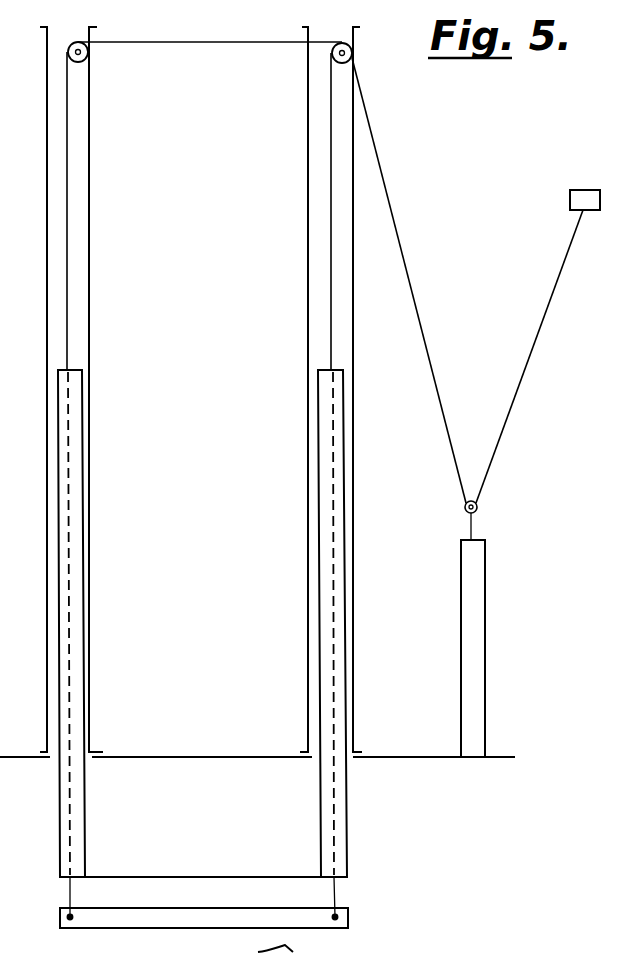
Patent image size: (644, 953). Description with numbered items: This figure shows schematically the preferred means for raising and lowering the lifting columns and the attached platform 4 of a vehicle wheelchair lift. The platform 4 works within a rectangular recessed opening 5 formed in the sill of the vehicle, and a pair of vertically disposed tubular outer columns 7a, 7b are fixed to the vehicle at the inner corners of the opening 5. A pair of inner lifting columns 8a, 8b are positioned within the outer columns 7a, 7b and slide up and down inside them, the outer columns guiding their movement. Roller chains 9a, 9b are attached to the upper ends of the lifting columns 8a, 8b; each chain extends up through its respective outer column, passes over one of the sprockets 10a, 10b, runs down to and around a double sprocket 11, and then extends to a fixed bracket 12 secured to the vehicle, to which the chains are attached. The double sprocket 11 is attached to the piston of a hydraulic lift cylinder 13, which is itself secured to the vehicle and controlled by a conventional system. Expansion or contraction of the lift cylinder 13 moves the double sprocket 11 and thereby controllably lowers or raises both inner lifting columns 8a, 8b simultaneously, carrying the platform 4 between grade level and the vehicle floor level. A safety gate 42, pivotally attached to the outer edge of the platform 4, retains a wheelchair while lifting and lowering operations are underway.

The platform 4 is at (212, 877).
The rectangular recessed opening 5 is at (195, 720).
The tubular outer column 7a is at (89, 212).
The tubular outer column 7b is at (308, 215).
The inner lifting column 8a is at (70, 470).
The inner lifting column 8b is at (325, 470).
The roller chain 9a is at (67, 297).
The roller chain 9b is at (331, 292).
The sprocket 10a is at (86, 58).
The sprocket 10b is at (351, 52).
The double sprocket 11 is at (478, 510).
The fixed bracket 12 is at (585, 192).
The hydraulic lift cylinder 13 is at (477, 641).
The safety gate 42 is at (204, 916).